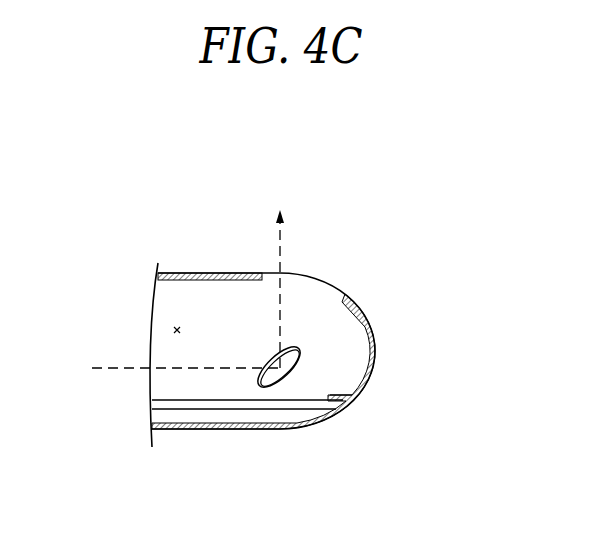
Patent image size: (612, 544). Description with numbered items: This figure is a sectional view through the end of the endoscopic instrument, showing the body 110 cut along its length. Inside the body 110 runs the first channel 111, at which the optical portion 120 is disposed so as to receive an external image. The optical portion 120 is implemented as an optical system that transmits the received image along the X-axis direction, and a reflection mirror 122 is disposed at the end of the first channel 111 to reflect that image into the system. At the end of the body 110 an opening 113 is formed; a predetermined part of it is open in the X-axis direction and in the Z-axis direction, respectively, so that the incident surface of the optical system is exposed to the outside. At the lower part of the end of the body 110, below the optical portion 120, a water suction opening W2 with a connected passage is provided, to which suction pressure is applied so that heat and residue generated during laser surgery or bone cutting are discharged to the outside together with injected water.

The body 110 is at (175, 432).
The first channel 111 is at (170, 330).
The opening 113 is at (317, 283).
The optical portion 120 is at (269, 399).
The reflection mirror 122 is at (288, 363).
The water suction opening W2 is at (350, 403).